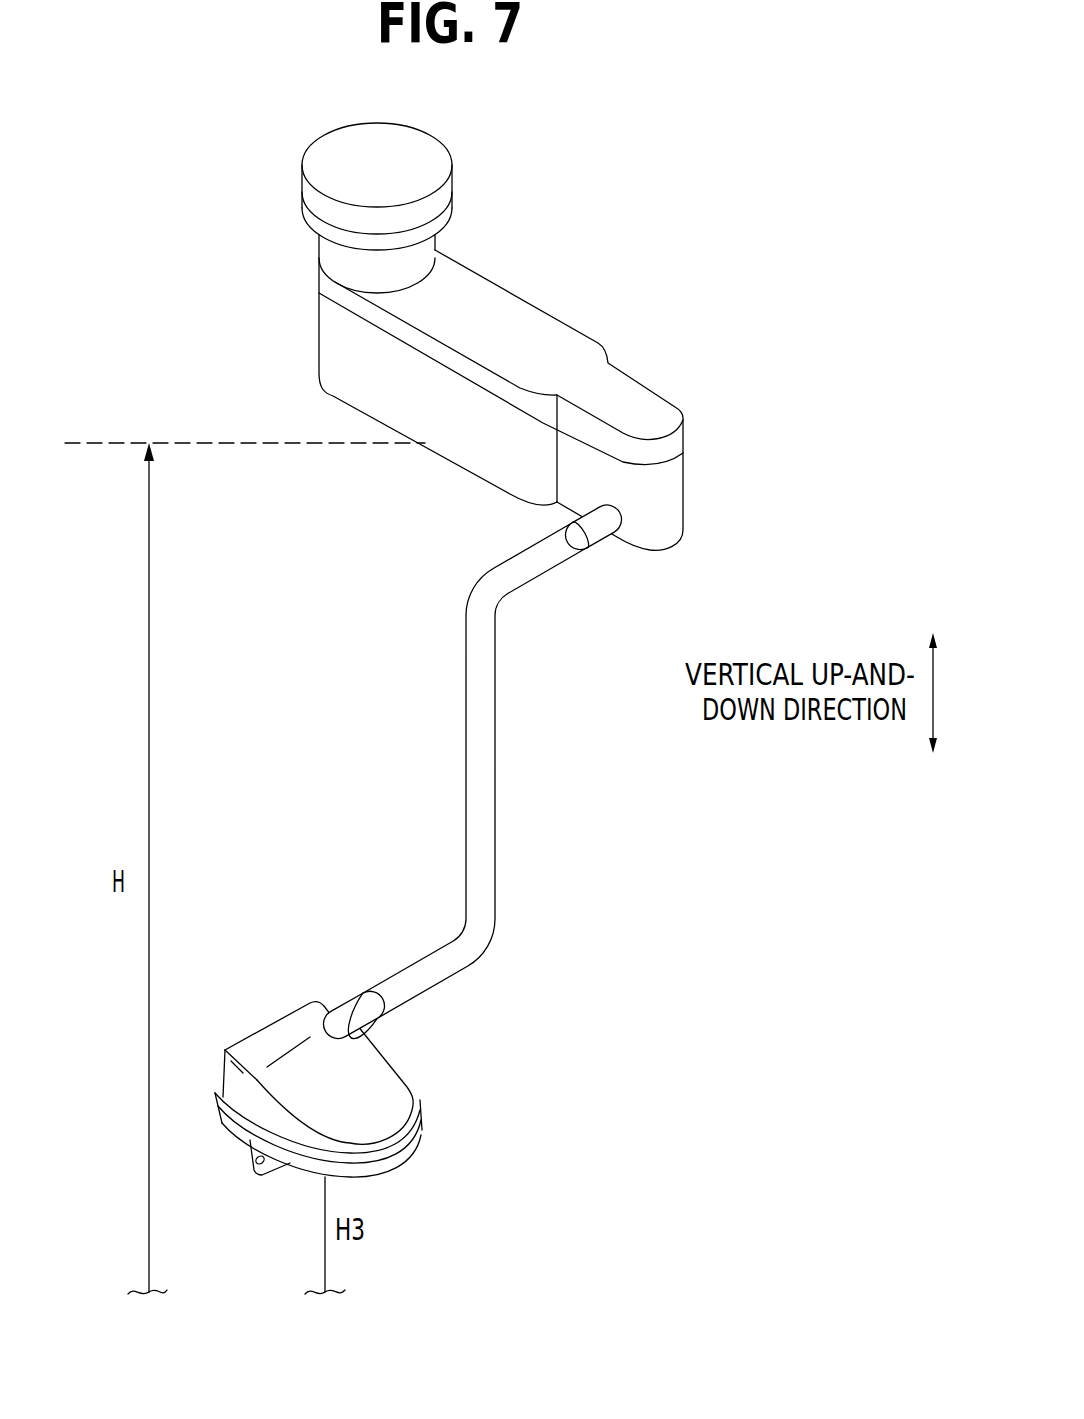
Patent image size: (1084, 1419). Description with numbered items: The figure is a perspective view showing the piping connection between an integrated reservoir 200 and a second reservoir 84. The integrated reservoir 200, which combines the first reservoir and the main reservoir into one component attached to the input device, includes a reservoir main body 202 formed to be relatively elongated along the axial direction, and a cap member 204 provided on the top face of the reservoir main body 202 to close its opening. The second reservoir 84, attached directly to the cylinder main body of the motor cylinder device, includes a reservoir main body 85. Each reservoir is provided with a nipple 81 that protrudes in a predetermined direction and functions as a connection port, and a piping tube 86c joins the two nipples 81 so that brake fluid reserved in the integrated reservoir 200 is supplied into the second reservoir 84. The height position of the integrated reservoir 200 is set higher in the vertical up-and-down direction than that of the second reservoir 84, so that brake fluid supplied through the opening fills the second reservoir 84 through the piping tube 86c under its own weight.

The integrated reservoir 200 is at (492, 336).
The reservoir main body 202 is at (473, 460).
The cap member 204 is at (443, 146).
The nipple 81 is at (590, 530).
The piping tube 86c is at (485, 783).
The reservoir main body 85 is at (392, 1092).
The second reservoir 84 is at (432, 1128).